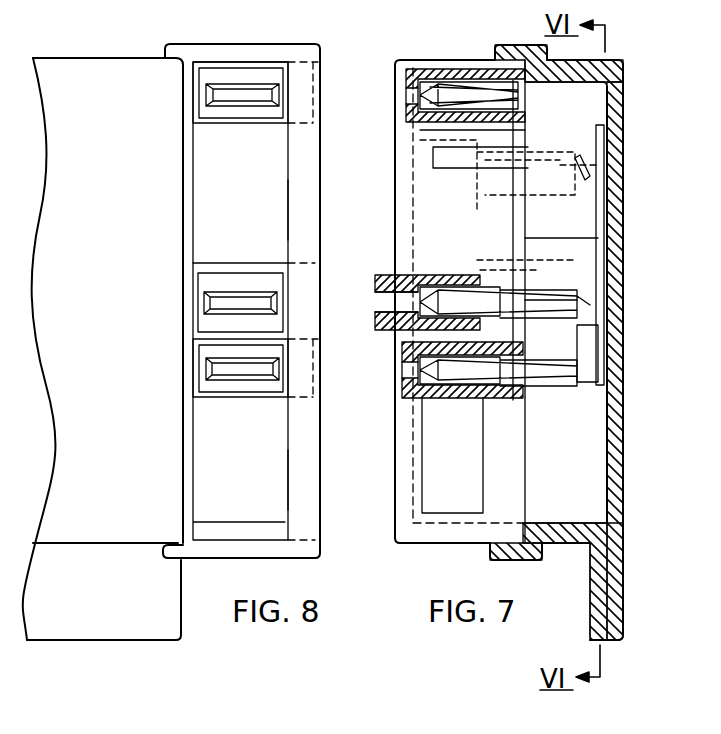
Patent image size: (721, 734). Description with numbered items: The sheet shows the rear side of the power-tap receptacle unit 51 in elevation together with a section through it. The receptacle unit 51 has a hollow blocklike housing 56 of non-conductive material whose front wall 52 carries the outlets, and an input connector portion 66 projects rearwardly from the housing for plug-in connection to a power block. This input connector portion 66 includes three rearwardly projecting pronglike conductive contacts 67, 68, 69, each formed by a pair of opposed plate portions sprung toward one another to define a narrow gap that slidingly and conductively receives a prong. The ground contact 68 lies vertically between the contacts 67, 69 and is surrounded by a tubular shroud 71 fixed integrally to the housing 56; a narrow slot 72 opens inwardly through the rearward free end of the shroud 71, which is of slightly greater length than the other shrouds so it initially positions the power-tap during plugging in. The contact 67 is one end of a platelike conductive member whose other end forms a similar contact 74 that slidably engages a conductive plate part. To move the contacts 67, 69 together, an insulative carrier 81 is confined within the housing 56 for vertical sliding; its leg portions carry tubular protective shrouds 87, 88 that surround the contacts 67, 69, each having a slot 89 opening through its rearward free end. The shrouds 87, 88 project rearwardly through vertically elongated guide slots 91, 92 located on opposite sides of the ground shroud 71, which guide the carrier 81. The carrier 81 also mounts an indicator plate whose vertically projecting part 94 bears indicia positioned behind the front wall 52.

In FIG. 8, the receptacle unit 51 is at (90, 52).
In FIG. 7, the receptacle unit 51 is at (622, 355).
In FIG. 7, the front wall 52 is at (614, 465).
In FIG. 7, the housing 56 is at (623, 98).
In FIG. 8, the input connector portion 66 is at (170, 207).
In FIG. 7, the input connector portion 66 is at (385, 70).
In FIG. 7, the contact 67 is at (466, 88).
In FIG. 7, the ground contact 68 is at (472, 270).
In FIG. 7, the contact 69 is at (456, 400).
In FIG. 8, the tubular shroud 71 is at (210, 283).
In FIG. 7, the tubular shroud 71 is at (400, 283).
In FIG. 7, the slot 72 is at (393, 320).
In FIG. 7, the contact 74 is at (452, 162).
In FIG. 7, the carrier 81 is at (518, 231).
In FIG. 8, the tubular protective shroud 87 is at (218, 112).
In FIG. 7, the tubular protective shroud 87 is at (425, 70).
In FIG. 8, the tubular protective shroud 88 is at (200, 390).
In FIG. 7, the tubular protective shroud 88 is at (440, 398).
In FIG. 8, the slot 89 is at (240, 95).
In FIG. 7, the slot 89 is at (410, 96).
In FIG. 8, the guide slot 91 is at (287, 220).
In FIG. 8, the guide slot 92 is at (283, 480).
In FIG. 7, the vertically projecting part 94 is at (603, 212).